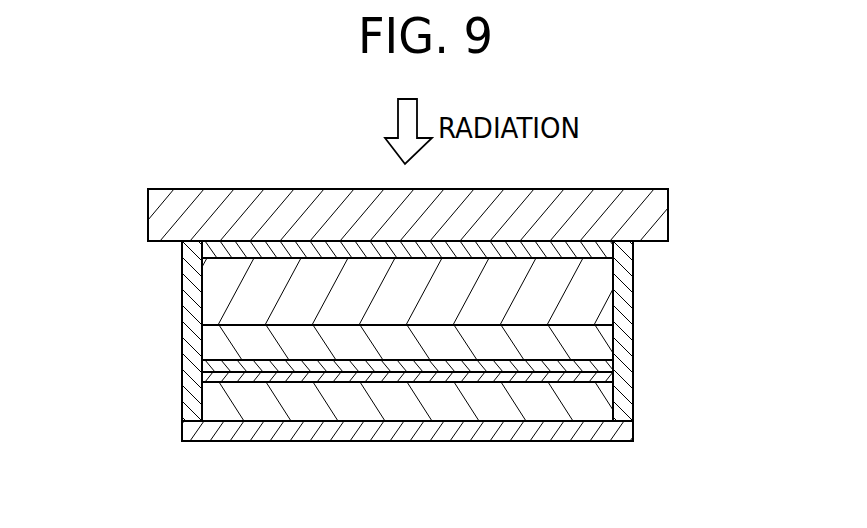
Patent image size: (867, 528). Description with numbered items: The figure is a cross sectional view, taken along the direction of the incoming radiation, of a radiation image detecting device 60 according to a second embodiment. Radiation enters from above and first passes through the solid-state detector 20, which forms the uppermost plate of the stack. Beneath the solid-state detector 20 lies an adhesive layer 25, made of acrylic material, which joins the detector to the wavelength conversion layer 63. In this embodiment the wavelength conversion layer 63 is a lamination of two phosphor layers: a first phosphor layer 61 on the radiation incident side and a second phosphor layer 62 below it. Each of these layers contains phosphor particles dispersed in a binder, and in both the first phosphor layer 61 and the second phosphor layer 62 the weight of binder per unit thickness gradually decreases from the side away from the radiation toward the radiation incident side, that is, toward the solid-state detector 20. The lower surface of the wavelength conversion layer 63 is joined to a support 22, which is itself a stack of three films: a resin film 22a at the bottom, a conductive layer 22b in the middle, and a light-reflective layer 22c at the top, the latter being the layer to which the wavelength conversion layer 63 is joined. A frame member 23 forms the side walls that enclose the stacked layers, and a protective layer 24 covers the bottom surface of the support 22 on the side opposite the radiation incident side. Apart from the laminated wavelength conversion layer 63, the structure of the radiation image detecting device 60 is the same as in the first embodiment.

The radiation image detecting device 60 is at (192, 175).
The solid-state detector 20 is at (668, 212).
The frame member 23 is at (623, 316).
The protective layer 24 is at (426, 430).
The adhesive layer 25 is at (600, 247).
The wavelength conversion layer 63 is at (111, 272).
The first phosphor layer 61 is at (230, 293).
The second phosphor layer 62 is at (230, 340).
The support 22 is at (725, 353).
The resin film 22a is at (606, 404).
The conductive layer 22b is at (606, 377).
The light-reflective layer 22c is at (603, 366).